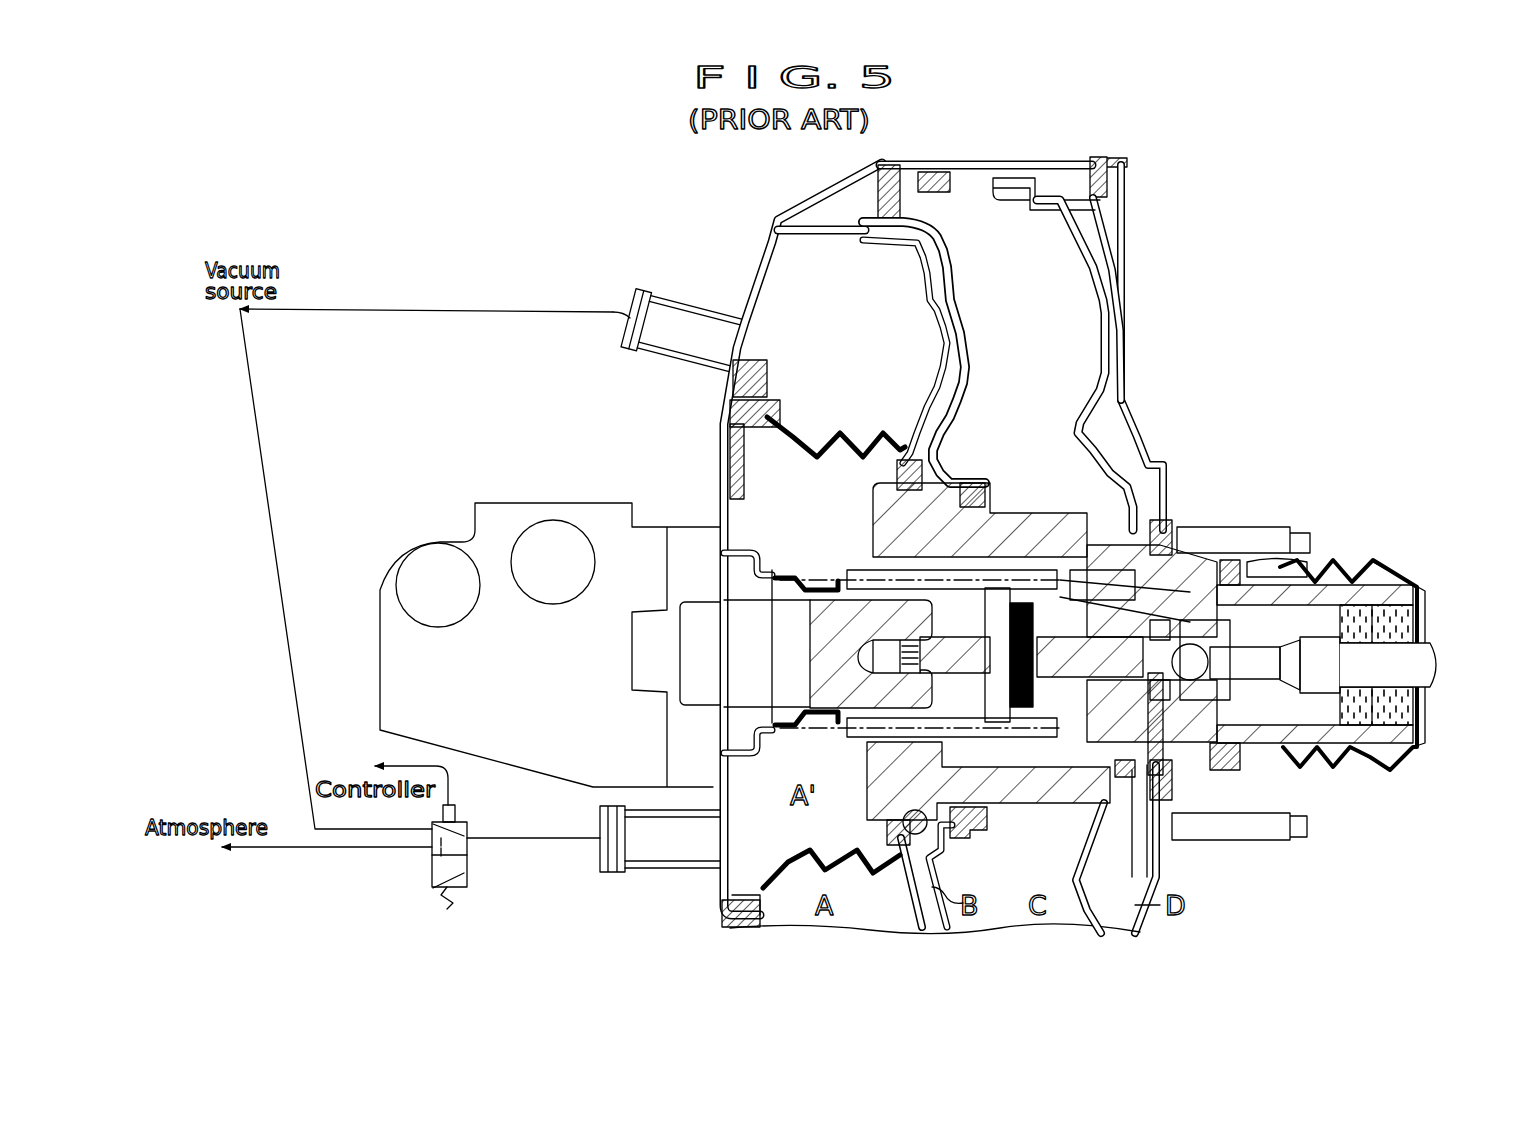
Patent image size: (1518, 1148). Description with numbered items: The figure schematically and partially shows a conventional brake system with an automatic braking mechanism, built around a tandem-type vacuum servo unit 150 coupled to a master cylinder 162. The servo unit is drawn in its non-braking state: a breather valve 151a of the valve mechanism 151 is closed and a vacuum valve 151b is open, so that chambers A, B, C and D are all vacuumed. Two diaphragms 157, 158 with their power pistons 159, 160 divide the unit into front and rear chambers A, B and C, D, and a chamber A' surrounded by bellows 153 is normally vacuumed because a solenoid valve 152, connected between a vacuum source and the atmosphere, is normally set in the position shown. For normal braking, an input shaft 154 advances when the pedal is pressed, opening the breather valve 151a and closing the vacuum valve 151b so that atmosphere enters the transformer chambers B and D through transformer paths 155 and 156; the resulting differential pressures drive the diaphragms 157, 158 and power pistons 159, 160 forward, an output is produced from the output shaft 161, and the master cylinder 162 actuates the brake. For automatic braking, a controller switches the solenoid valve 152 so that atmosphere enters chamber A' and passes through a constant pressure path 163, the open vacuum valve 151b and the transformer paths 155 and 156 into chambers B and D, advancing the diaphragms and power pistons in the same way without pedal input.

The vacuum servo unit 150 is at (1190, 308).
The valve mechanism 151 is at (1245, 559).
The breather valve 151a is at (1205, 625).
The vacuum valve 151b is at (1227, 605).
The solenoid valve 152 is at (432, 858).
The bellows 153 is at (819, 457).
The input shaft 154 is at (1432, 680).
The transformer path 155 is at (1173, 720).
The transformer path 156 is at (1063, 750).
The diaphragm 157 is at (870, 236).
The diaphragm 158 is at (1001, 200).
The power piston 159 is at (935, 320).
The power piston 160 is at (1100, 305).
The output shaft 161 is at (862, 648).
The master cylinder 162 is at (606, 520).
The constant pressure path 163 is at (1105, 575).